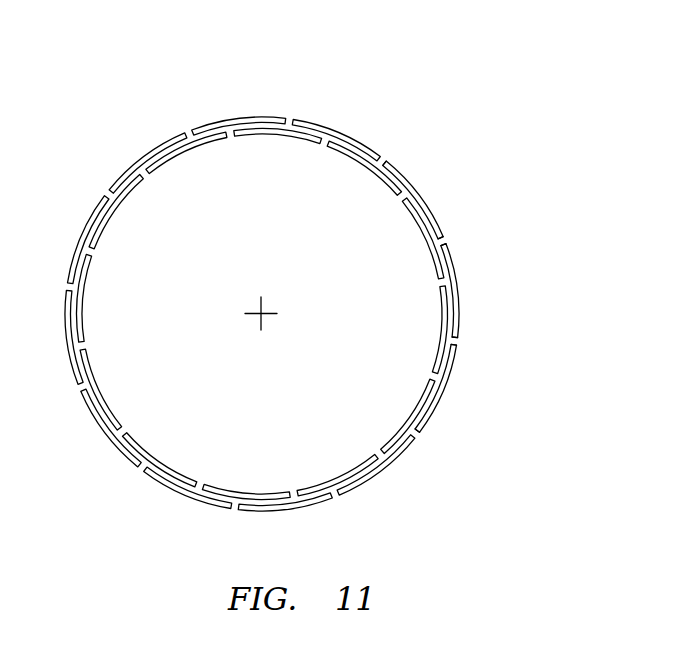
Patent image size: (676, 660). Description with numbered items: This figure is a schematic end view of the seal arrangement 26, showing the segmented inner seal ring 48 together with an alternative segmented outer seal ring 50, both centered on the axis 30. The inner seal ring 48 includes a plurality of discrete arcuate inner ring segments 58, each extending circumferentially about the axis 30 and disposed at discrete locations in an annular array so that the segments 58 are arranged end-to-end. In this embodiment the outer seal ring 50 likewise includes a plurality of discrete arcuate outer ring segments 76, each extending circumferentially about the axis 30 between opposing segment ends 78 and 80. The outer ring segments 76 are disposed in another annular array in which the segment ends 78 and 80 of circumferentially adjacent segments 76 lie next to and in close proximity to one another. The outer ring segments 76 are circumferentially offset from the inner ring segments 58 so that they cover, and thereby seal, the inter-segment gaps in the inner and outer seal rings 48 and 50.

The stator assembly 26 is at (301, 281).
The axis 30 is at (261, 305).
The inner seal ring 48 is at (340, 120).
The outer seal ring 50 is at (360, 170).
The inner ring segment 58 is at (431, 243).
The outer ring segment 76 is at (417, 186).
The segment end 78 is at (384, 158).
The segment end 80 is at (445, 240).